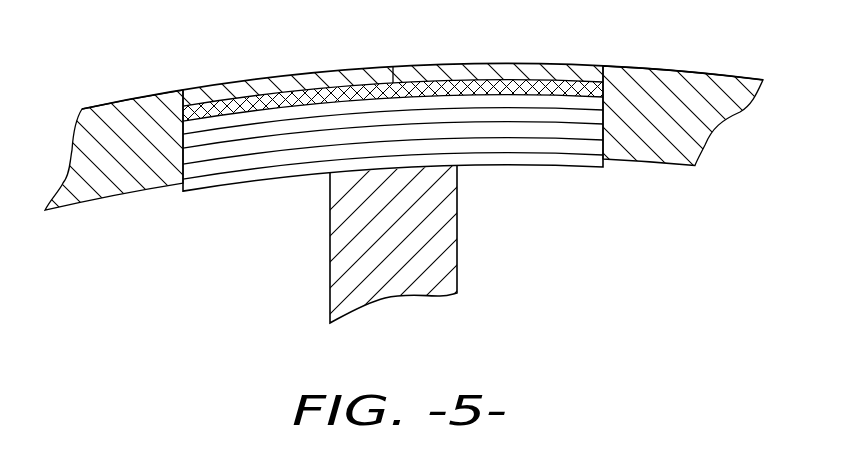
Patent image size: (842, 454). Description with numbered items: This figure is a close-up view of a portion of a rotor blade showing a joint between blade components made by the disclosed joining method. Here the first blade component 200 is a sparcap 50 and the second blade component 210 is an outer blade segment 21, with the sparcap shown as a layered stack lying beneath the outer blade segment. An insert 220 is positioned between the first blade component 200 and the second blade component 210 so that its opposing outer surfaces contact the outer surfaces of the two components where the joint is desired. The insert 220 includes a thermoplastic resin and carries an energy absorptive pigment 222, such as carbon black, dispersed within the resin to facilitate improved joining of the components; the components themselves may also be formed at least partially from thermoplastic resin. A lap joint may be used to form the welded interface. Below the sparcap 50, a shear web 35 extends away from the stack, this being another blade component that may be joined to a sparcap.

The outer blade segment 21 is at (107, 177).
The second blade component 210 is at (143, 99).
The insert 220 is at (448, 82).
The energy absorptive pigment 222 is at (513, 90).
The sparcap 50 is at (276, 161).
The first blade component 200 is at (515, 173).
The shear web 35 is at (355, 240).